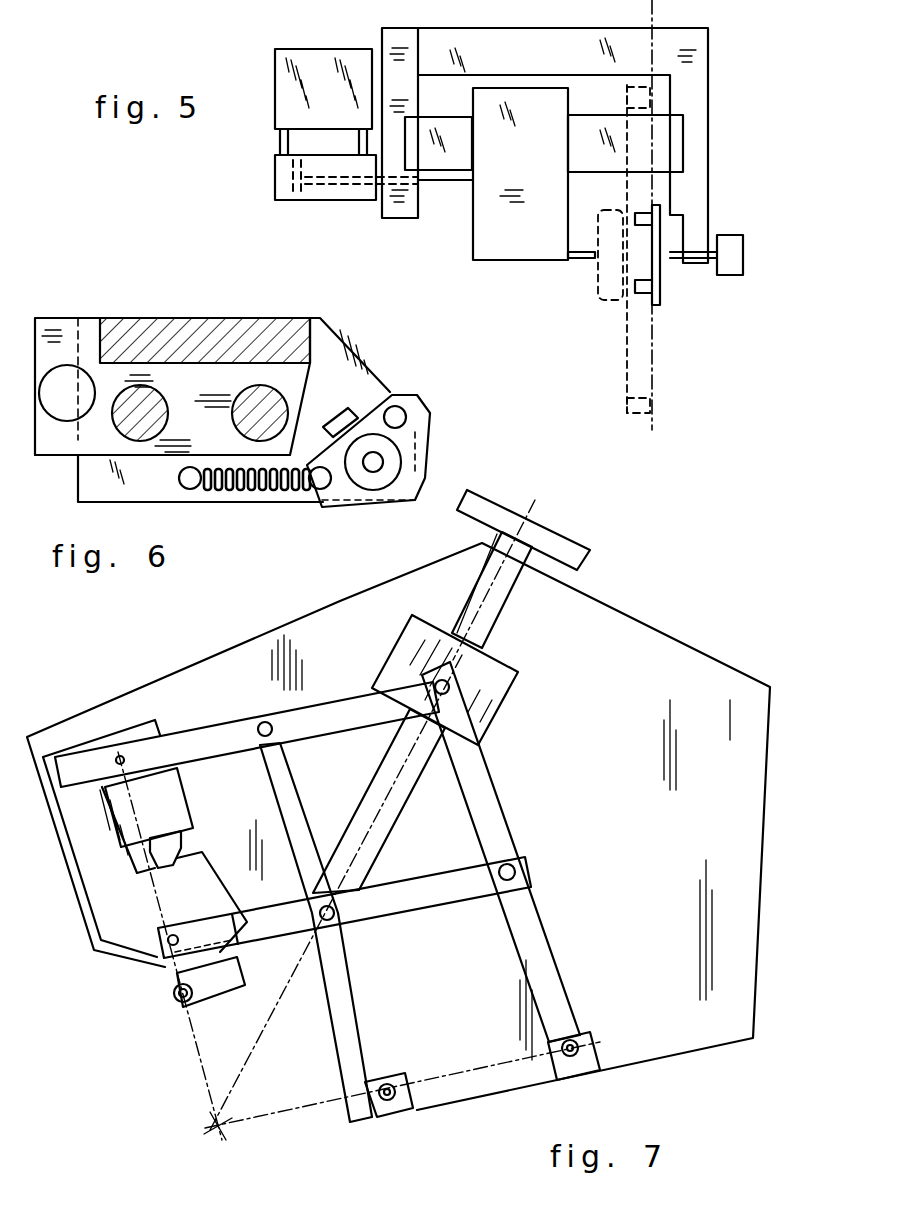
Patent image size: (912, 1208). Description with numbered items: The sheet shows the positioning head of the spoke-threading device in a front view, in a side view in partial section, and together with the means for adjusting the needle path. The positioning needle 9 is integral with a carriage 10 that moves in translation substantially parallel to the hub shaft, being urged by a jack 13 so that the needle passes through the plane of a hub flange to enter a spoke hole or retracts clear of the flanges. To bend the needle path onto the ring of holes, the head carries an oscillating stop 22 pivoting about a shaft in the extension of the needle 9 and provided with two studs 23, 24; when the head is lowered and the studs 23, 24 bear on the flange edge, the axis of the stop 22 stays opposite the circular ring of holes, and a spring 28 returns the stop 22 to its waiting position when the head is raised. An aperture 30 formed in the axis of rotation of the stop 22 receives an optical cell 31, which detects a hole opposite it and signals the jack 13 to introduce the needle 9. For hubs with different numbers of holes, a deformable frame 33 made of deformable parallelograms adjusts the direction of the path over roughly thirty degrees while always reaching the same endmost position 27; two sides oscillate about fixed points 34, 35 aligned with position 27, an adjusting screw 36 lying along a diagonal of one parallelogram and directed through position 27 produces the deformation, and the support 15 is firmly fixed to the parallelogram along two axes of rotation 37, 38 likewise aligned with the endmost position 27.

In FIG. 5, the positioning needle 9 is at (570, 256).
In FIG. 7, the positioning needle 9 is at (178, 995).
In FIG. 5, the carriage 10 is at (510, 212).
In FIG. 5, the jack 13 is at (275, 182).
In FIG. 7, the support 15 is at (85, 752).
In FIG. 5, the oscillating stop 22 is at (660, 290).
In FIG. 6, the oscillating stop 22 is at (425, 420).
In FIG. 5, the stud 23 is at (640, 292).
In FIG. 6, the stud 23 is at (312, 492).
In FIG. 5, the stud 24 is at (635, 222).
In FIG. 6, the stud 24 is at (398, 414).
In FIG. 7, the endmost position 27 is at (215, 1126).
In FIG. 6, the spring 28 is at (234, 498).
In FIG. 6, the aperture 30 is at (385, 462).
In FIG. 5, the optical cell 31 is at (733, 245).
In FIG. 6, the optical cell 31 is at (371, 474).
In FIG. 7, the deformable frame 33 is at (490, 810).
In FIG. 7, the fixed point 34 is at (392, 1110).
In FIG. 7, the fixed point 35 is at (575, 1058).
In FIG. 7, the adjusting screw 36 is at (492, 598).
In FIG. 7, the axis of rotation 37 is at (122, 756).
In FIG. 7, the axis of rotation 38 is at (168, 950).